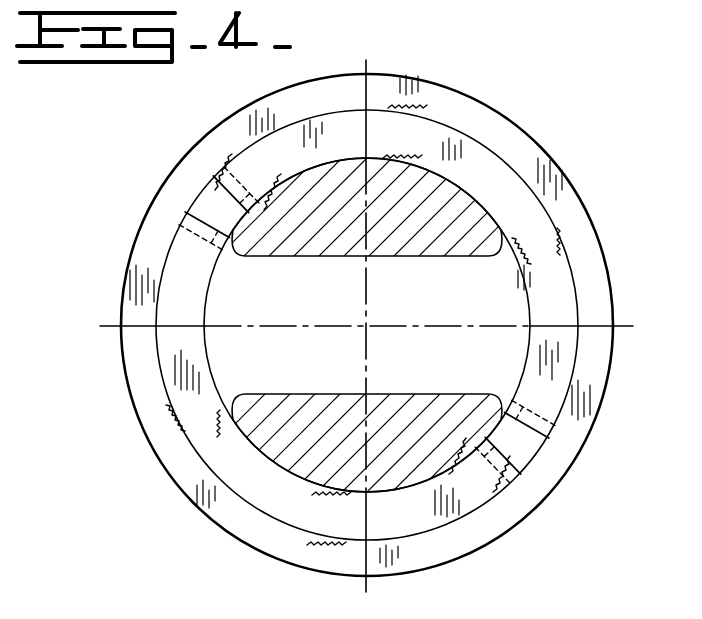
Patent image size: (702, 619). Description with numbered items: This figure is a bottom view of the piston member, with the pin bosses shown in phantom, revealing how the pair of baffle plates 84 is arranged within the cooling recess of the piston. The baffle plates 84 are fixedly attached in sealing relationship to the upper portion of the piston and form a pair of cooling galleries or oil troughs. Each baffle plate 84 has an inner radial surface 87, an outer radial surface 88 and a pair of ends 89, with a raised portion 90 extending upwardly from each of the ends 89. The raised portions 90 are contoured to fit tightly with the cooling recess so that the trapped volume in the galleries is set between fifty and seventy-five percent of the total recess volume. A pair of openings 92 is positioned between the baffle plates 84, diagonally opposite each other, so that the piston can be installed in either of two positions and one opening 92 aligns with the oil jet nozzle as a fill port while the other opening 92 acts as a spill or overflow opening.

The baffle plates 84 is at (563, 284).
The inner radial surface 87 is at (471, 205).
The outer radial surface 88 is at (493, 150).
The ends 89 is at (215, 198).
The raised portion 90 is at (212, 258).
The openings 92 is at (222, 195).